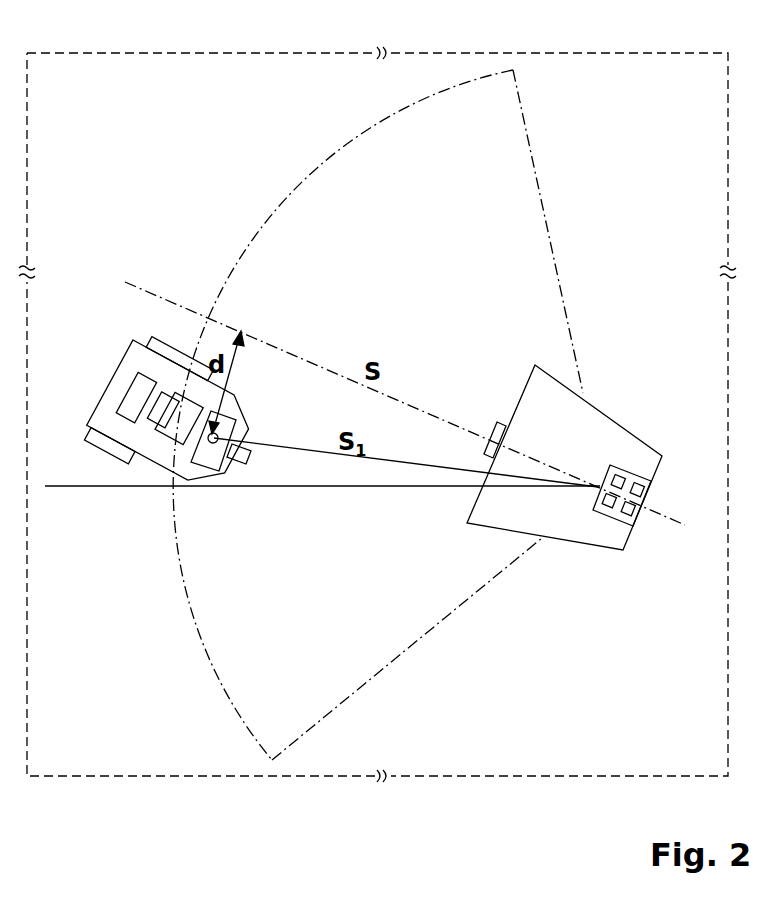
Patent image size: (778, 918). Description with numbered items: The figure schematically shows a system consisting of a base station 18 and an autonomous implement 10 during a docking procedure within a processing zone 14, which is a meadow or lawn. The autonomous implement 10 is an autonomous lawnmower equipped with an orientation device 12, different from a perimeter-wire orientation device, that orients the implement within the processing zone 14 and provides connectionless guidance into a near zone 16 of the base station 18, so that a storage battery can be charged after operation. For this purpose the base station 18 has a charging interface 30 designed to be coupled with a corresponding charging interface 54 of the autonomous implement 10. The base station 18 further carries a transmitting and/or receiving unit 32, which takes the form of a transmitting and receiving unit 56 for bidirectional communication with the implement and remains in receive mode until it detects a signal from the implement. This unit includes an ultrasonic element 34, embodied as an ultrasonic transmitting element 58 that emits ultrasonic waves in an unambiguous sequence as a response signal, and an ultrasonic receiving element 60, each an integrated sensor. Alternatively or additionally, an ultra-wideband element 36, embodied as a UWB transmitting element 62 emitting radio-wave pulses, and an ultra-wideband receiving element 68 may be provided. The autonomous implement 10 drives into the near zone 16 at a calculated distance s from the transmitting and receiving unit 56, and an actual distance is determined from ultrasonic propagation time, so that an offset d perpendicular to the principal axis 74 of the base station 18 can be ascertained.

The autonomous implement 10 is at (189, 411).
The orientation device 12 is at (196, 478).
The processing zone 14 is at (606, 96).
The near zone 16 is at (511, 180).
The base station 18 is at (598, 438).
The charging interface 30 is at (494, 420).
The transmitting and/or receiving unit 32 is at (650, 531).
The ultrasonic element 34 is at (578, 541).
The ultra-wideband element 36 is at (679, 519).
The charging interface 54 is at (249, 453).
The transmitting and receiving unit 56 is at (619, 522).
The ultrasonic transmitting element 58 is at (601, 512).
The ultrasonic receiving element 60 is at (634, 497).
The UWB transmitting element 62 is at (645, 515).
The ultra-wideband receiving element 68 is at (650, 488).
The principal axis 74 is at (268, 347).